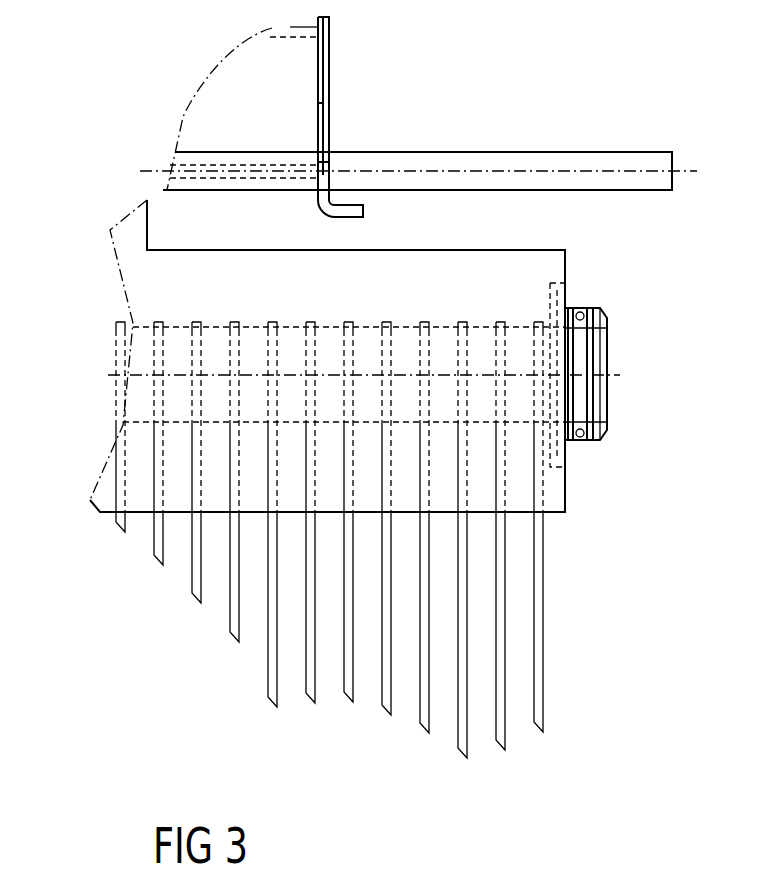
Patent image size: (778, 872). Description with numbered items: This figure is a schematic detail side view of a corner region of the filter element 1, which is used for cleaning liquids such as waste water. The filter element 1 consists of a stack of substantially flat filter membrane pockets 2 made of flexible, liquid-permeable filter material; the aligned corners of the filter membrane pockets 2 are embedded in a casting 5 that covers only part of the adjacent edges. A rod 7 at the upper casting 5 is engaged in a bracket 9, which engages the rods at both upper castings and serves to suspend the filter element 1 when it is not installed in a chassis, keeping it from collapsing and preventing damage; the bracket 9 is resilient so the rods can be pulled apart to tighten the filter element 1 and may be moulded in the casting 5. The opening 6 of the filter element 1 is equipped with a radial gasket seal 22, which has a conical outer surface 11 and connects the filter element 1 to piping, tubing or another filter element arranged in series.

The filter element 1 is at (372, 479).
The filter membrane pocket 2 is at (231, 618).
The casting 5 is at (153, 278).
The opening 6 is at (644, 375).
The rod 7 is at (528, 160).
The bracket 9 is at (323, 57).
The conical outer surface 11 is at (600, 312).
The radial gasket seal 22 is at (595, 440).